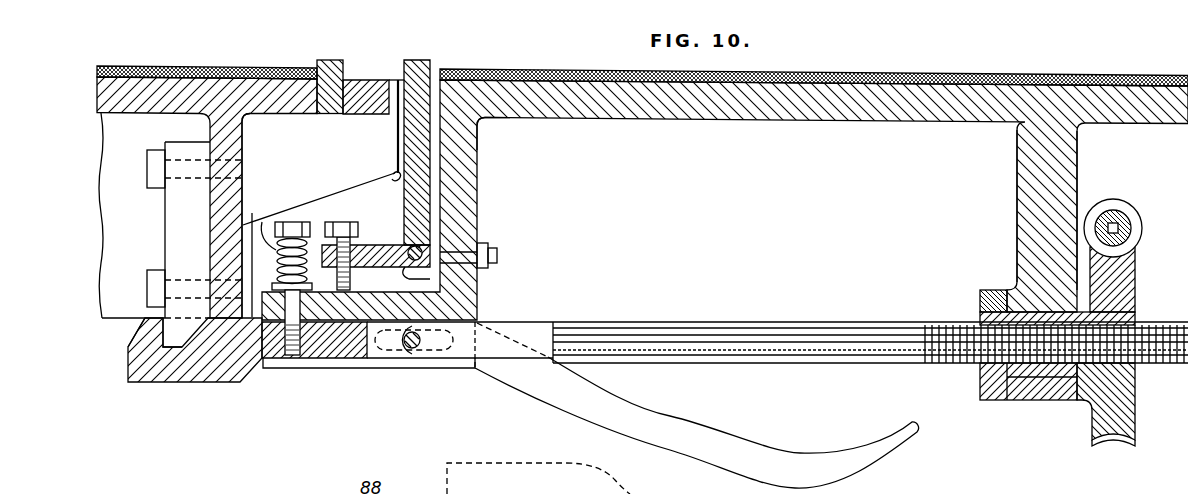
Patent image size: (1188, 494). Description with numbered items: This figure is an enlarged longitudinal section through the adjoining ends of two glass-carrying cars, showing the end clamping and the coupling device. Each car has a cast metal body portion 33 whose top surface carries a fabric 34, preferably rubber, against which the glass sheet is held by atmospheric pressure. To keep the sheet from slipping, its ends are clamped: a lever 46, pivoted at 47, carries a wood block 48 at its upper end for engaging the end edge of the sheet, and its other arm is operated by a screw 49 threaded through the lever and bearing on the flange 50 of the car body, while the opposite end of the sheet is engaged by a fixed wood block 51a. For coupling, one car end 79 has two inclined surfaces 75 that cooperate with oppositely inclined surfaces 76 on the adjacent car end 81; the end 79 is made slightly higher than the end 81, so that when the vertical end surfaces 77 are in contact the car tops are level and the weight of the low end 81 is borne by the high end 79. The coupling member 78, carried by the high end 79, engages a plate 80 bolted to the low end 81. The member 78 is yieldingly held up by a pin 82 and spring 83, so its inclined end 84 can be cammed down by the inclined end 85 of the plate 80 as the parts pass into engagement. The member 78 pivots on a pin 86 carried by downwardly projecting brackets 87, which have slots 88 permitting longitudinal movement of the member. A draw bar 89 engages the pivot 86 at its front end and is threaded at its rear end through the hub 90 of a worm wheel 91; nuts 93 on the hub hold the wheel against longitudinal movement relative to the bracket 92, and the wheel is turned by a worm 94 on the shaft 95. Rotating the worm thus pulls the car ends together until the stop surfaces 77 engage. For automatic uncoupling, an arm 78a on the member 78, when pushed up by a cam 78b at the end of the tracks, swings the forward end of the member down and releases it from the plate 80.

The fabric 34 is at (218, 67).
The fixed wood block 51a is at (326, 62).
The wood block 48 is at (432, 63).
The end of the car 81 is at (258, 105).
The vertical end surfaces 77 is at (396, 137).
The inclined surfaces 75 is at (390, 173).
The pin 82 is at (295, 222).
The inclined surfaces 76 is at (338, 203).
The spring 83 is at (261, 226).
The screw 49 is at (345, 223).
The lever 46 is at (443, 196).
The pivot 47 is at (497, 264).
The end of the car 79 is at (505, 114).
The body portion 33 is at (947, 123).
The bracket 92 is at (1025, 218).
The nuts 93 is at (1000, 290).
The shaft 95 is at (1105, 224).
The worm 94 is at (1142, 222).
The draw bar 89 is at (770, 356).
The hub 90 is at (1043, 378).
The worm wheel 91 is at (1125, 415).
The inclined end 84 is at (140, 327).
The inclined end 85 is at (192, 334).
The plate 80 is at (165, 253).
The coupling member 78 is at (197, 380).
The flange 50 is at (337, 344).
The brackets 87 is at (375, 370).
The slots 88 is at (395, 364).
The pin 86 is at (419, 344).
The cams 78b is at (552, 470).
The arm 78a is at (682, 468).